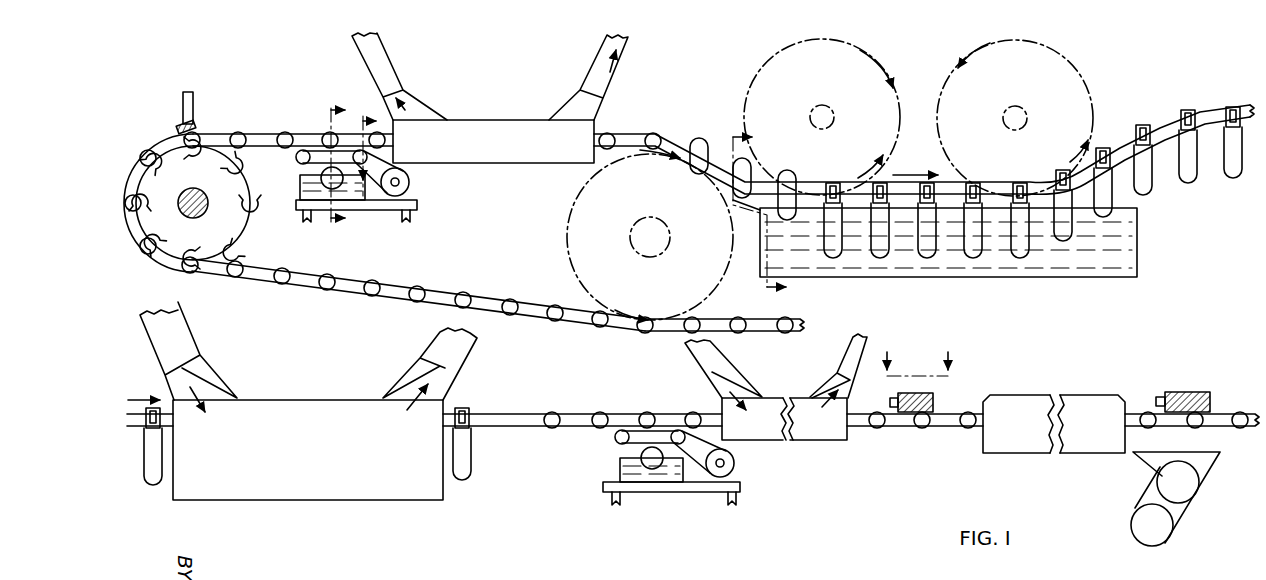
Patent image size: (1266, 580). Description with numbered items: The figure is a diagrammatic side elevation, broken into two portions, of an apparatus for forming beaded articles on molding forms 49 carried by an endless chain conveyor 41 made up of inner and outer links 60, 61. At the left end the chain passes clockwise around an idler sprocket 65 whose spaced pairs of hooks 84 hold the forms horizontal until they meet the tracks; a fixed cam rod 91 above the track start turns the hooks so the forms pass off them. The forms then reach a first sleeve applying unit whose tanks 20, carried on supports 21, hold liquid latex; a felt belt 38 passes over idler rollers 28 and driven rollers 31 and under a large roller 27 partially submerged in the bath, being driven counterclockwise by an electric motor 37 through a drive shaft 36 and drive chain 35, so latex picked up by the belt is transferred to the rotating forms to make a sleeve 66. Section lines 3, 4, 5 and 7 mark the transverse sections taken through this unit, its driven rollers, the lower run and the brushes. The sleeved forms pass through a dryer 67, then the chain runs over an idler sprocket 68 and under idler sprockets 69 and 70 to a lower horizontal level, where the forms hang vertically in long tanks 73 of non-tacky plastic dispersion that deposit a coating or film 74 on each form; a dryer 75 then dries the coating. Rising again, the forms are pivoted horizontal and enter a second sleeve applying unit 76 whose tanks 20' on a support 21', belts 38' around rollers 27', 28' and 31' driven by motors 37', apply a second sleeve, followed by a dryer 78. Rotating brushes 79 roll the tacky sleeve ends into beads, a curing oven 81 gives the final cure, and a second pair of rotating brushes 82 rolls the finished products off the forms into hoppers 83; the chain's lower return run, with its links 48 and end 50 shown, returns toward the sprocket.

The section line 3- 3 is at (347, 165).
The section line 4- 4 is at (378, 154).
The section line 5- 5 is at (772, 212).
The section line 7- 7 is at (919, 354).
The tanks 20 is at (332, 207).
The supports 21 is at (356, 217).
The roller 27 is at (312, 192).
The idler rollers 28 is at (286, 163).
The driven rollers 31 is at (367, 135).
The drive chain 35 is at (412, 166).
The drive shaft 36 is at (408, 184).
The electric motor 37 is at (420, 197).
The belt 38 is at (303, 184).
The endless chain conveyor 41 is at (276, 130).
The chain link 48 is at (147, 143).
The molding forms 49 is at (375, 284).
The chain end 50 is at (413, 290).
The inner links 60 is at (662, 136).
The outer links 61 is at (641, 135).
The idler sprocket 65 is at (174, 168).
The sleeve 66 is at (880, 215).
The dryer 67 is at (505, 135).
The idler sprocket 68 is at (576, 239).
The idler sprocket 69 is at (752, 97).
The idler sprocket 70 is at (1085, 88).
The tanks 73 is at (1010, 270).
The coating or film 74 is at (1108, 200).
The dryer 75 is at (358, 408).
The second sleeve applying unit 76 is at (611, 460).
The dryer 78 is at (800, 442).
The rotating brushes 79 is at (932, 399).
The curing oven 81 is at (1068, 402).
The rotating brushes 82 is at (1178, 392).
The hoppers 83 is at (1166, 481).
The hooks 84 is at (148, 252).
The cam rod 91 is at (193, 124).
The tanks 20' is at (651, 493).
The support 21' is at (671, 504).
The roller 27' is at (643, 482).
The idler roller 28' is at (601, 444).
The driven roller 31' is at (690, 425).
The motor 37' is at (738, 465).
The belt 38' is at (616, 490).